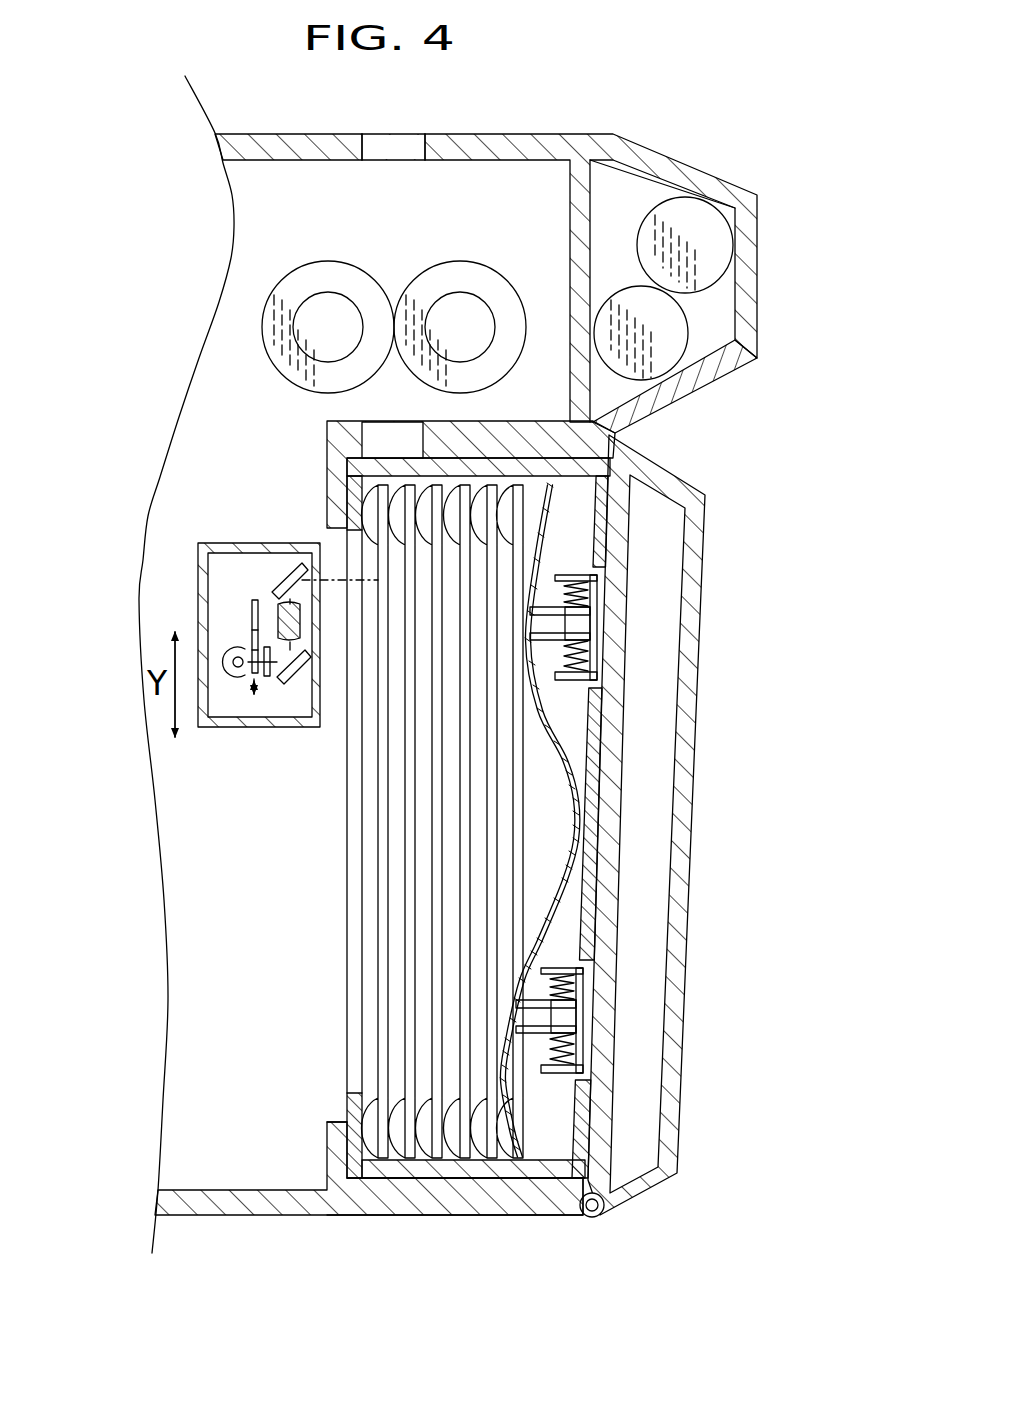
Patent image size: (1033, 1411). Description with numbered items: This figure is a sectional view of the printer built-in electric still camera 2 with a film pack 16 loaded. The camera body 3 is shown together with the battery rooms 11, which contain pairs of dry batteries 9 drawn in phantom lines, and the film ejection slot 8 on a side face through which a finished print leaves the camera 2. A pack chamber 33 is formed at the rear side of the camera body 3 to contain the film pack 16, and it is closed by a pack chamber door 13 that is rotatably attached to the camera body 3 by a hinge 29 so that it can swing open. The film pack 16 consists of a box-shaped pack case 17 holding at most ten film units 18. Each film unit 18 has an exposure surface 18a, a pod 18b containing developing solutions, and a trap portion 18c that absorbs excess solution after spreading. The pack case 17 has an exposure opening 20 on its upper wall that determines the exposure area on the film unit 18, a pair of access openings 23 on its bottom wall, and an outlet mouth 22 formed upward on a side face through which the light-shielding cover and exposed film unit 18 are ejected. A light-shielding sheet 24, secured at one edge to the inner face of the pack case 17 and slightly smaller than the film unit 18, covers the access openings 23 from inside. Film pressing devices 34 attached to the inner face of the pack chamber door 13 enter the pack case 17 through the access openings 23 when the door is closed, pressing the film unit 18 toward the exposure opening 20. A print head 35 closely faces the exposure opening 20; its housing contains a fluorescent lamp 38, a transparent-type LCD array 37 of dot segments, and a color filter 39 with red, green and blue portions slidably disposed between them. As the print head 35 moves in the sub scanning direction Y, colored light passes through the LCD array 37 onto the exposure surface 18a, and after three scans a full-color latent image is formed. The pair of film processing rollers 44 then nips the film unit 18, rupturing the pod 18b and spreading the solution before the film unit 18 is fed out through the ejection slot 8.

The housing 2 is at (512, 125).
The camera body 3 is at (178, 1218).
The film ejection slot 8 is at (368, 148).
The dry batteries 9 is at (662, 316).
The battery rooms 11 is at (607, 198).
The pack chamber door 13 is at (700, 920).
The film pack 16 is at (335, 975).
The pack case 17 is at (500, 1180).
The film unit 18 is at (419, 827).
The exposure surface 18a is at (378, 850).
The pod 18b is at (372, 512).
The trap portion 18c is at (362, 1140).
The exposure opening 20 is at (347, 1115).
The outlet mouth 22 is at (403, 466).
The access openings 23 is at (592, 580).
The light-shielding sheet 24 is at (590, 800).
The hinge 29 is at (592, 1218).
The pack chamber 33 is at (640, 460).
The film pressing devices 34 is at (568, 690).
The print head 35 is at (216, 691).
The LCD array 37 is at (270, 690).
The fluorescent lamp 38 is at (224, 718).
The color filter 39 is at (255, 690).
The film processing rollers 44 is at (300, 256).